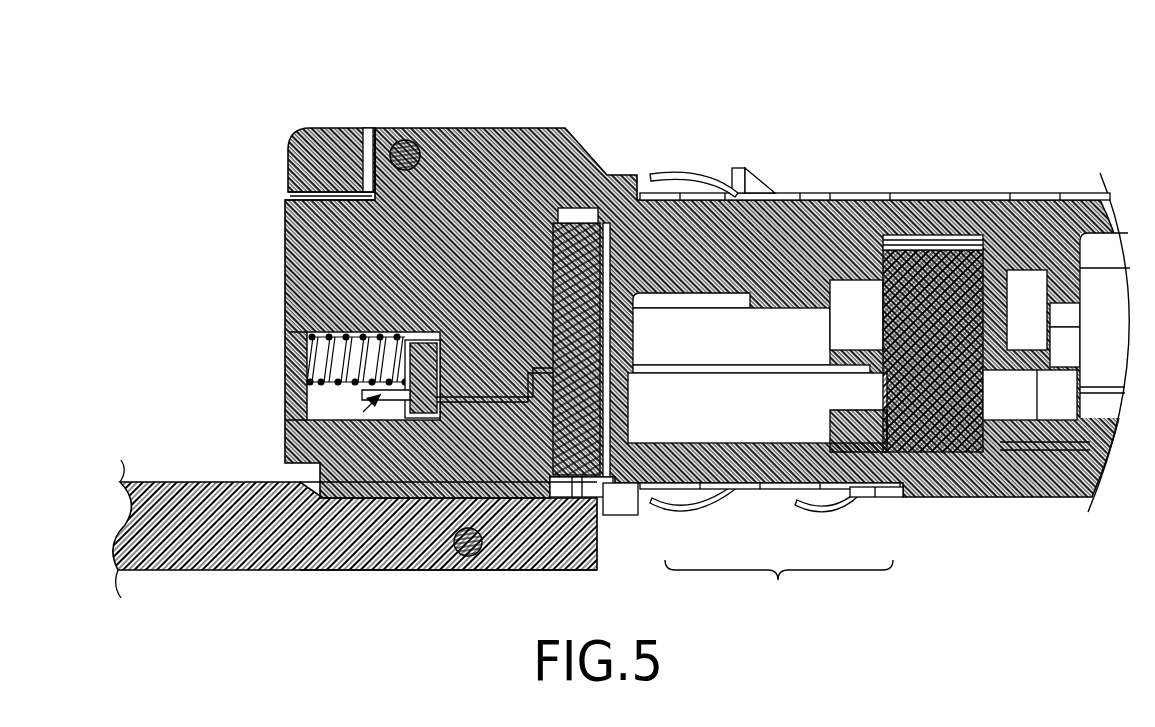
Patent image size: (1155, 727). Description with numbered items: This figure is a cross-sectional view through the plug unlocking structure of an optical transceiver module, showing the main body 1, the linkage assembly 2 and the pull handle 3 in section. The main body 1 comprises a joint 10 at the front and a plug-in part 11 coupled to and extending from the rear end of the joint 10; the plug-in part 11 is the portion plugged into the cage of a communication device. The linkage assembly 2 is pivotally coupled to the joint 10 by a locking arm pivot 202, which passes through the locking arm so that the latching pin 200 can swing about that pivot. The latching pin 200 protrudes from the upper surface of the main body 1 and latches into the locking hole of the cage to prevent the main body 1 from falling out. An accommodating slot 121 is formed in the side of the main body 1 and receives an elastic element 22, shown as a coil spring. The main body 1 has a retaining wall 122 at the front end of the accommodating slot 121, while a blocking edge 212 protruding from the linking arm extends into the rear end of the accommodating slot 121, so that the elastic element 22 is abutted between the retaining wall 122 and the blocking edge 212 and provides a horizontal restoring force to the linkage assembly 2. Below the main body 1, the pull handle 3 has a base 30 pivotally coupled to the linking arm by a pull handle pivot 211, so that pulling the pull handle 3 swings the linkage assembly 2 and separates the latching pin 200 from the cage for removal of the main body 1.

The main body 1 is at (779, 586).
The joint 10 is at (513, 478).
The plug-in part 11 is at (993, 480).
The linkage assembly 2 is at (327, 118).
The latching pin 200 is at (737, 168).
The locking arm pivot 202 is at (410, 150).
The elastic element 22 is at (323, 352).
The retaining wall 122 is at (287, 357).
The accommodating slot 121 is at (363, 412).
The blocking edge 212 is at (423, 400).
The pull handle pivot 211 is at (467, 542).
The pull handle 3 is at (171, 470).
The base 30 is at (350, 558).